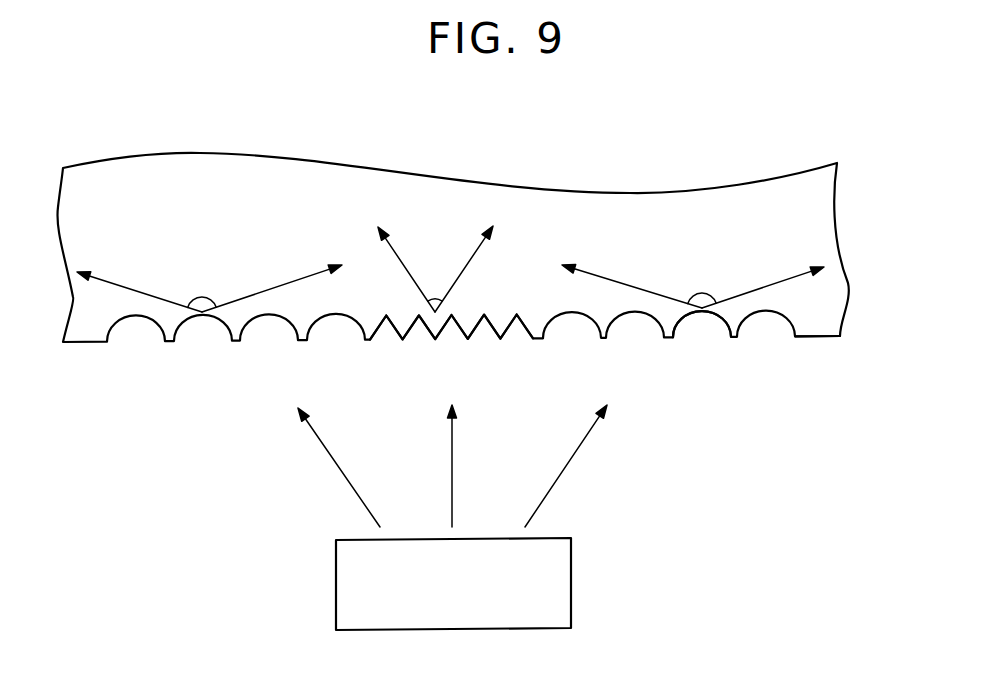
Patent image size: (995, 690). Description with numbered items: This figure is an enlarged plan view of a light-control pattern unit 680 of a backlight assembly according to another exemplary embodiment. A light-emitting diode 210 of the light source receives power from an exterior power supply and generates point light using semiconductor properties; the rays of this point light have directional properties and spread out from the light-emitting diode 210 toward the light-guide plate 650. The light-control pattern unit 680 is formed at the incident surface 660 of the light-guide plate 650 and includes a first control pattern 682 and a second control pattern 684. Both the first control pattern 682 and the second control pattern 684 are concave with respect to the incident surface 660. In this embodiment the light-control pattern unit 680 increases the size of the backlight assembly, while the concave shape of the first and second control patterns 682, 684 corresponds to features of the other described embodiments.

The light-guide plate 650 is at (576, 179).
The incident surface 660 is at (815, 337).
The light-control pattern unit 680 is at (503, 275).
The first control pattern 682 is at (395, 325).
The second control pattern 684 is at (718, 322).
The light-emitting diode (LED) 210 is at (563, 581).